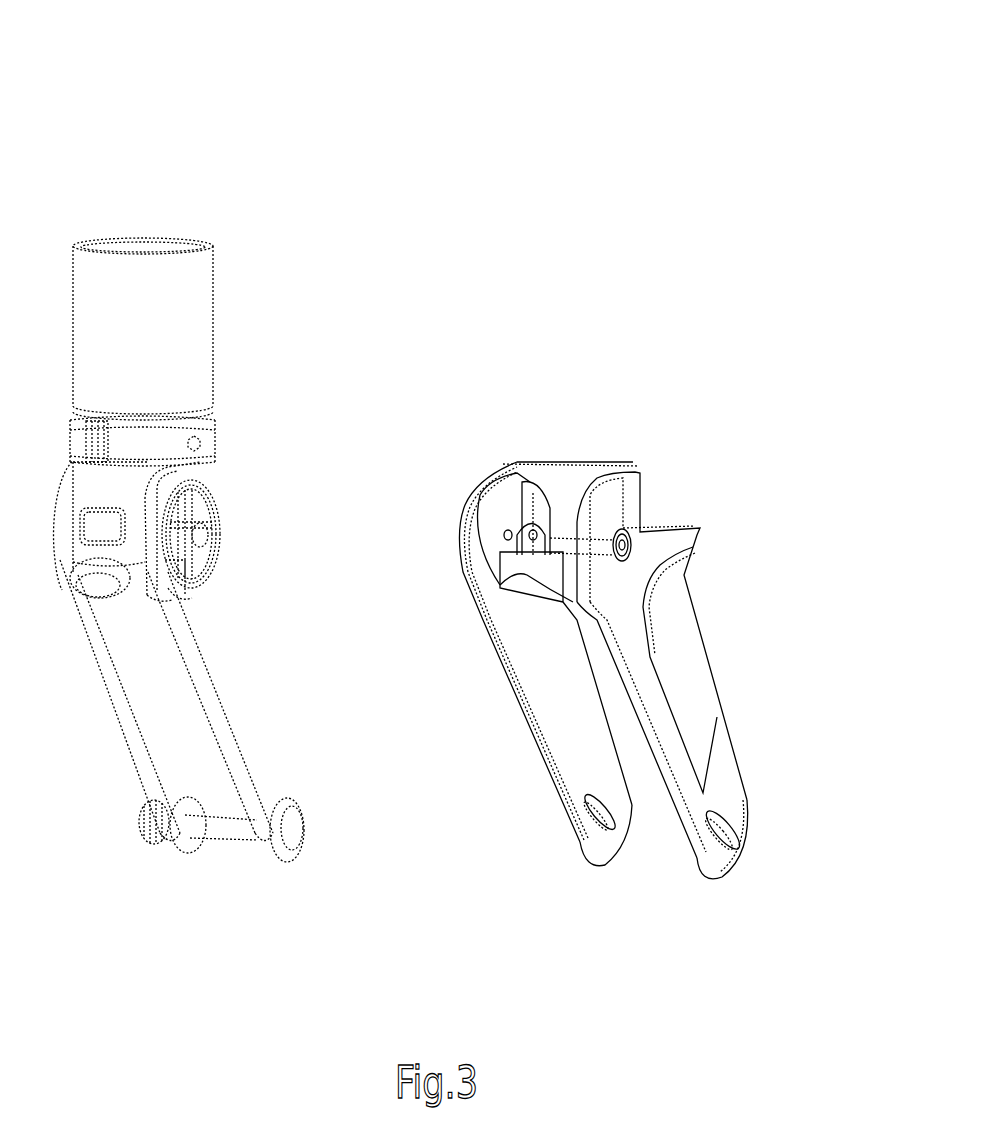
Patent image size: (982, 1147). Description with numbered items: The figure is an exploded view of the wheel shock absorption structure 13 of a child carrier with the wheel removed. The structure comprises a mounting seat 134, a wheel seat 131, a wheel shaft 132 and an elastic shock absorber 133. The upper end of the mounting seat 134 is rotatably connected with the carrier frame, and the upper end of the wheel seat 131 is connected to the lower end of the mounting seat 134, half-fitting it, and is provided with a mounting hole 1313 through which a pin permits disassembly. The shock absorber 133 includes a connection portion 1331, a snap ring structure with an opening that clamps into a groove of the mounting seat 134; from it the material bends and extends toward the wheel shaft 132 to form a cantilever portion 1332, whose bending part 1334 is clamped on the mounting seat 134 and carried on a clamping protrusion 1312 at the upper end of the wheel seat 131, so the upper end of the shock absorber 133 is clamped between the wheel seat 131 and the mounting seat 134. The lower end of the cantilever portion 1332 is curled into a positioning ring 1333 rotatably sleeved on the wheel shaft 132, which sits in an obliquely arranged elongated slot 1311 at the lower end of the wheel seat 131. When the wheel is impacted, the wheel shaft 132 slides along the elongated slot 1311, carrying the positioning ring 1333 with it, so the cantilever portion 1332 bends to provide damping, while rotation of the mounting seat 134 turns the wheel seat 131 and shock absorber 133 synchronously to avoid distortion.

The wheel shock absorption structure 13 is at (76, 46).
The wheel seat 131 is at (718, 766).
The elongated slot 1311 is at (735, 830).
The clamping protrusion 1312 is at (540, 478).
The mounting hole 1313 is at (640, 523).
The wheel shaft 132 is at (222, 827).
The elastic shock absorber 133 is at (408, 596).
The connection portion 1331 is at (197, 464).
The cantilever portion 1332 is at (227, 737).
The positioning ring 1333 is at (287, 807).
The bending part 1334 is at (155, 535).
The mounting seat 134 is at (118, 483).